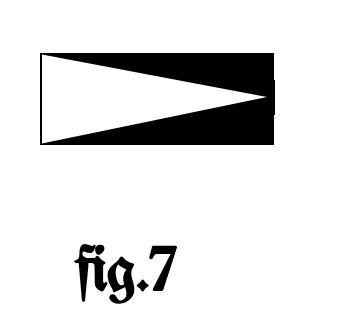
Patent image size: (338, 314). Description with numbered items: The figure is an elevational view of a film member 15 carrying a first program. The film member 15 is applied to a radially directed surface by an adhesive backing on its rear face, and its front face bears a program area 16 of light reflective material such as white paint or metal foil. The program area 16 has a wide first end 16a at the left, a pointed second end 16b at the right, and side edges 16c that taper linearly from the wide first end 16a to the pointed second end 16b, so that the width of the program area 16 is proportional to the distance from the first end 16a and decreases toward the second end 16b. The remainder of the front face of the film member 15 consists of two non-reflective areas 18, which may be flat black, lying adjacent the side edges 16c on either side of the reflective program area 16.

The film member 15 is at (38, 147).
The program area 16 is at (83, 107).
The wide first end 16a is at (41, 86).
The pointed second end 16b is at (274, 98).
The side edges 16c is at (99, 64).
The non-reflective areas 18 is at (216, 66).